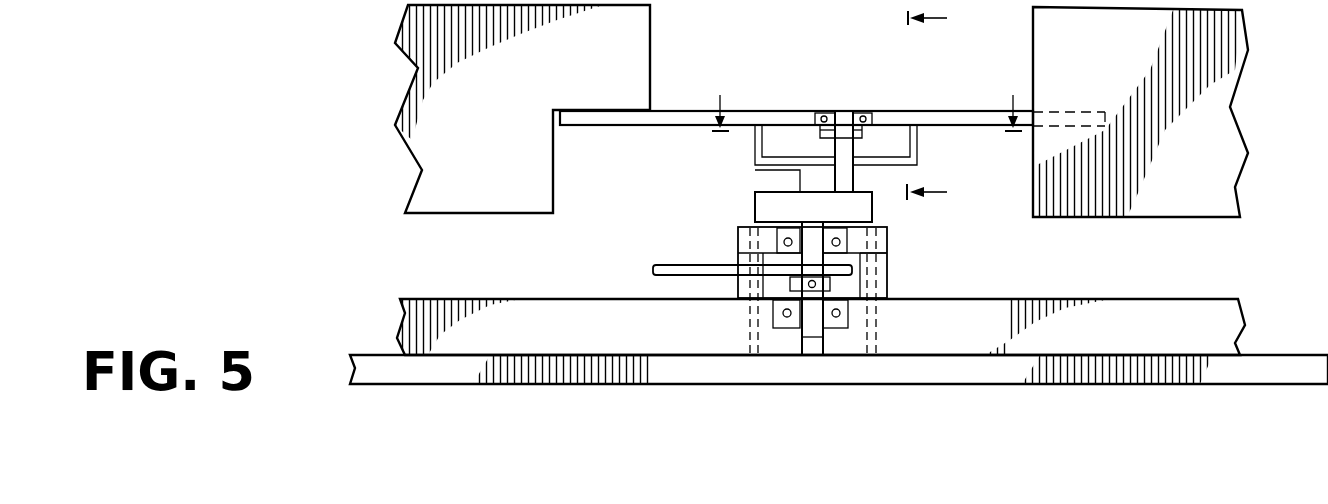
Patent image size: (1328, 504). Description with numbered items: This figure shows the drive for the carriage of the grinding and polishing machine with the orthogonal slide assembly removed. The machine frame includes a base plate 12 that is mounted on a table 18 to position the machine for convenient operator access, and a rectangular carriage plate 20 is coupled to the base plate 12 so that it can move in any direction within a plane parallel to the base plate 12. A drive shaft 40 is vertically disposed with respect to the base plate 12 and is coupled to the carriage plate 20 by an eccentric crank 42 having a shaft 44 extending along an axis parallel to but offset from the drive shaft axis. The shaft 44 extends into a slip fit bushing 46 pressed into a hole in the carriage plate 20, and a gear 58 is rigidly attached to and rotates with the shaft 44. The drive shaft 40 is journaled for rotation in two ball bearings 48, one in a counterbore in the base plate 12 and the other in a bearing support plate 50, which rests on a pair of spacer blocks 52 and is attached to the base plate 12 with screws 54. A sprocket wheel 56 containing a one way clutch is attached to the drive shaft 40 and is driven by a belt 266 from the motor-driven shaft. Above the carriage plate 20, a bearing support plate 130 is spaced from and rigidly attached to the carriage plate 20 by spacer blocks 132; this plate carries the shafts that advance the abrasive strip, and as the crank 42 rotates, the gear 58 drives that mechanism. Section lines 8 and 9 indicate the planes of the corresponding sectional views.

The section line 8- 8 is at (942, 108).
The section line 9- 9 is at (867, 92).
The base plate 12 is at (1143, 299).
The table 18 is at (1283, 355).
The carriage plate 20 is at (767, 110).
The drive shaft 40 is at (810, 356).
The eccentric crank 42 is at (758, 203).
The shaft 44 is at (842, 126).
The slip fit bushing 46 is at (867, 113).
The ball bearings 48 is at (848, 313).
The bearing support plate 50 is at (738, 244).
The spacer blocks 52 is at (887, 272).
The screws 54 is at (745, 225).
The sprocket wheel 56 is at (790, 285).
The gear 58 is at (866, 131).
The bearing support plate 130 is at (903, 168).
The spacer blocks 132 is at (920, 140).
The belt 266 is at (685, 276).